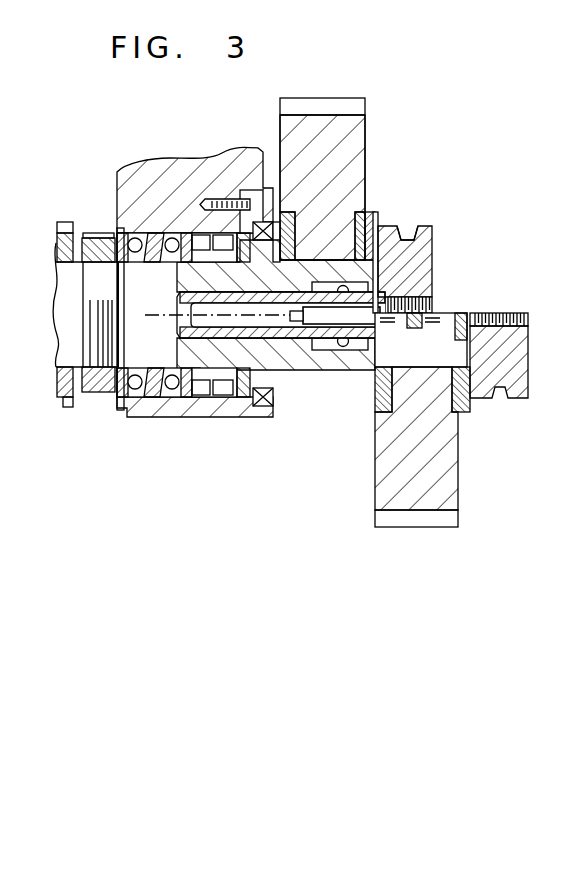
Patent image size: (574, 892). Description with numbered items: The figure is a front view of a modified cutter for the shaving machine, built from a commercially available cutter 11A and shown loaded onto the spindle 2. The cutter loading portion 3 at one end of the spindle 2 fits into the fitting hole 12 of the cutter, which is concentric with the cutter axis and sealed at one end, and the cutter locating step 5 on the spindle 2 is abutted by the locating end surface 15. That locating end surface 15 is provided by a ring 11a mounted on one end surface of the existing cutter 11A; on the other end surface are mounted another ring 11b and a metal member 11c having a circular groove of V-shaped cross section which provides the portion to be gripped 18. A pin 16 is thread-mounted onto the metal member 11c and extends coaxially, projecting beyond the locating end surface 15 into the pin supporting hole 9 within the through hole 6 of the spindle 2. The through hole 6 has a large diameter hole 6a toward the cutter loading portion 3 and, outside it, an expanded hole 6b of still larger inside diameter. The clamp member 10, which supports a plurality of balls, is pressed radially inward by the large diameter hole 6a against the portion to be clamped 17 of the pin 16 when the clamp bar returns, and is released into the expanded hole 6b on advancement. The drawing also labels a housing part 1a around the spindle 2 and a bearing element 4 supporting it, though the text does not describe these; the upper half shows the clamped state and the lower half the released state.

The housing 1a is at (156, 197).
The spindle 2 is at (112, 370).
The cutter loading portion 3 is at (318, 372).
The bearing 4 is at (169, 392).
The cutter locating step 5 is at (306, 214).
The through hole 6 is at (88, 316).
The large diameter hole 6a is at (170, 305).
The expanded hole 6b is at (385, 270).
The pin supporting hole 9 is at (222, 327).
The clamp member 10 is at (378, 325).
The commercially available cutter 11A is at (360, 104).
The ring 11a is at (246, 212).
The ring 11b is at (375, 212).
The metal member 11c is at (432, 230).
The fitting hole 12 is at (375, 452).
The locating end surface 15 is at (375, 380).
The pin 16 is at (300, 358).
The portion to be clamped 17 is at (422, 328).
The portion to be gripped 18 is at (412, 229).